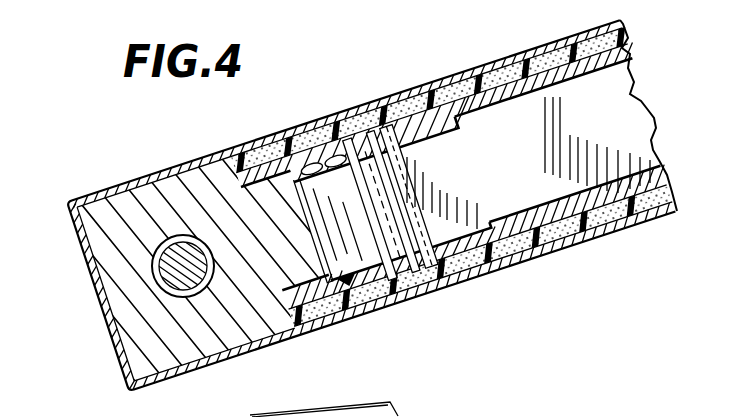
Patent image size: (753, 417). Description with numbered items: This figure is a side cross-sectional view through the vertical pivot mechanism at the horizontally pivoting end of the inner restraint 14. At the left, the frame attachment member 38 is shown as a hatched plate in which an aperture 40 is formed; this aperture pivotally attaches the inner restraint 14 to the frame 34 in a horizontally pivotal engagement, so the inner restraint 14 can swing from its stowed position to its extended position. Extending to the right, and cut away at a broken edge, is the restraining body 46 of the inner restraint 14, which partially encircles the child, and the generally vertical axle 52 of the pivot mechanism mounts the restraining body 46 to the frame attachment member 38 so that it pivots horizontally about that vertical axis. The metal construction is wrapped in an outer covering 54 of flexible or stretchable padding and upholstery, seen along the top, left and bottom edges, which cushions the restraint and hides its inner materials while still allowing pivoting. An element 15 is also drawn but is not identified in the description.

The housing assembly 14 is at (467, 66).
The slide channel 15 is at (373, 128).
The bore 34 is at (160, 262).
The end plate 38 is at (108, 205).
The boss 40 is at (183, 237).
The cut-away portion 46 is at (622, 117).
The cavity 52 is at (428, 178).
The bevelled edge 54 is at (565, 36).